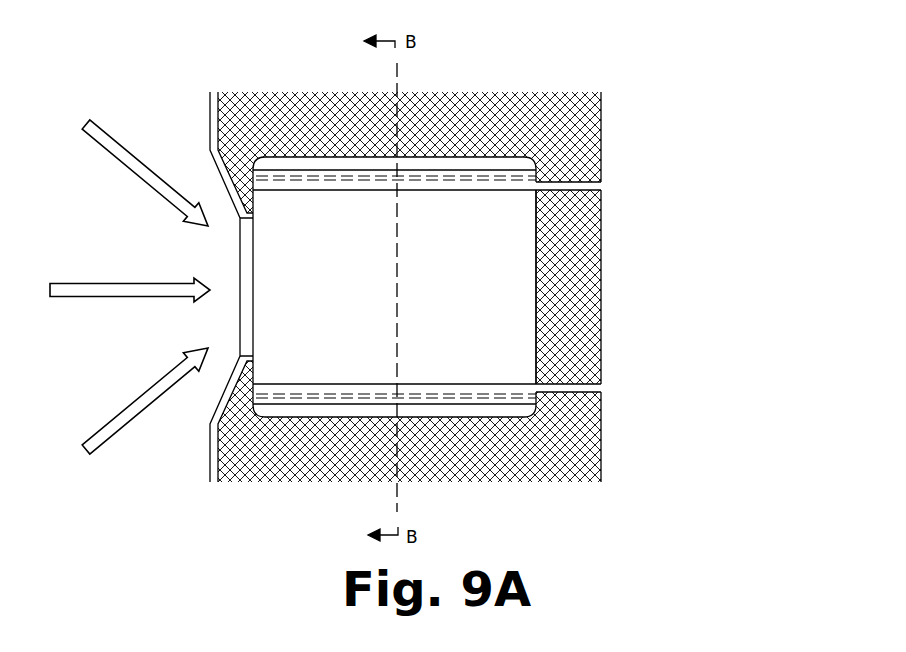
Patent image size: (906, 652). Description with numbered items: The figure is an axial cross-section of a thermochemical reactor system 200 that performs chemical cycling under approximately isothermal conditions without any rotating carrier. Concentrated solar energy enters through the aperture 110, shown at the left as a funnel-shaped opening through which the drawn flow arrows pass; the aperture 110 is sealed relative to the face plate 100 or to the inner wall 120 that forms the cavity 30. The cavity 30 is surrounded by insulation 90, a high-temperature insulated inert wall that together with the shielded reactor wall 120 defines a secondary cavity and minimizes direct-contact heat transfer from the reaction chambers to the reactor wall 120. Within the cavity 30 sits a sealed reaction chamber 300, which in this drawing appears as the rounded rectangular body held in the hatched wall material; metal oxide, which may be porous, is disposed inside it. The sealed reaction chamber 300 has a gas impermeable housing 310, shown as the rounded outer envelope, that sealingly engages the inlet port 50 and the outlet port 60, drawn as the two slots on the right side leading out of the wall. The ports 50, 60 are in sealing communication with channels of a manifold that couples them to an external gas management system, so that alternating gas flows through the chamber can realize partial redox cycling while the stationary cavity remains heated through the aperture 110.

The thermochemical reactor system 200 is at (684, 61).
The insulation 90 is at (296, 93).
The inner wall 120 is at (288, 418).
The sealed reaction chamber 300 is at (510, 393).
The inlet port 50 is at (612, 191).
The outlet port 60 is at (612, 383).
The aperture 110 is at (245, 258).
The gas impermeable housing 310 is at (443, 170).
The cavity 30 is at (440, 330).
The face plate 100 is at (232, 386).